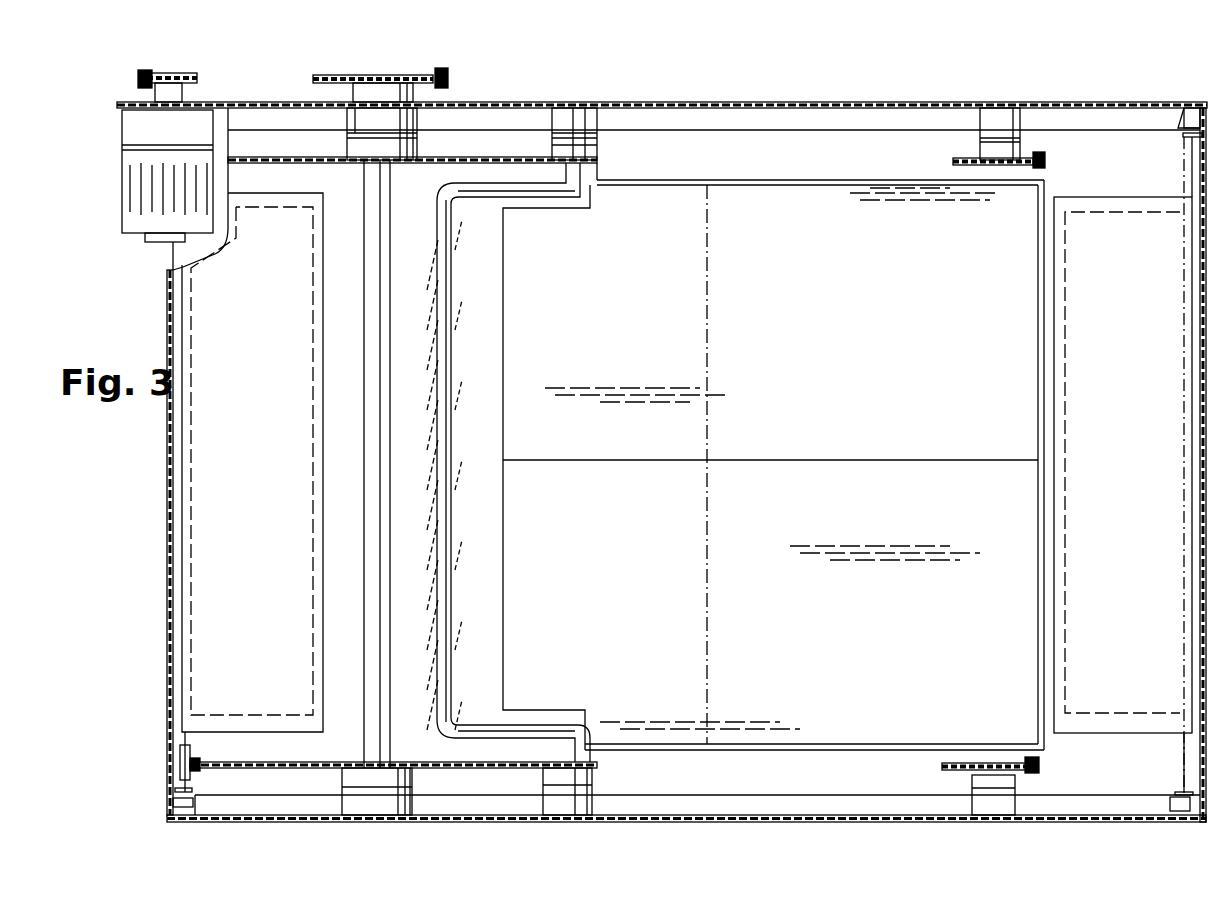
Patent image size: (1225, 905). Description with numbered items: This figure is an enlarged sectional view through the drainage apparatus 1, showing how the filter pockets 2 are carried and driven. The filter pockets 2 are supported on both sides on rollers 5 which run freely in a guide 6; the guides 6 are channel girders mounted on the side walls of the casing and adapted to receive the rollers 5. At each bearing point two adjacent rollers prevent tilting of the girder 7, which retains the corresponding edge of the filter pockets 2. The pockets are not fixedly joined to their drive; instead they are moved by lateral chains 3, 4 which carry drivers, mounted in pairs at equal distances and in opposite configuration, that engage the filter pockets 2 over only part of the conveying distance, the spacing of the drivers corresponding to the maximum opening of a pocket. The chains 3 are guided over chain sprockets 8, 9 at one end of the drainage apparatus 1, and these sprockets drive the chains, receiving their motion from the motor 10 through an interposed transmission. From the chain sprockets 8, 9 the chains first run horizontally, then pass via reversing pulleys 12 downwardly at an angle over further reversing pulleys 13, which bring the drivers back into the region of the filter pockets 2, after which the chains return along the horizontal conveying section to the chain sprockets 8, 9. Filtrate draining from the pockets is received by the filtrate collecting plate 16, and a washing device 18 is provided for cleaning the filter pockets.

The drainage apparatus 1 is at (778, 96).
The filter pockets 2 is at (207, 472).
The lateral chains 3 is at (1045, 155).
The chain 4 is at (1043, 762).
The rollers 5 is at (1193, 110).
The guide 6 is at (1180, 120).
The girder 7 is at (180, 742).
The chain sprocket 8 is at (290, 157).
The chain sprocket 9 is at (317, 762).
The motor 10 is at (130, 206).
The reversing pulleys 12 is at (568, 163).
The reversing pulleys 13 is at (956, 160).
The filtrate collecting plate 16 is at (763, 505).
The washing device 18 is at (440, 480).